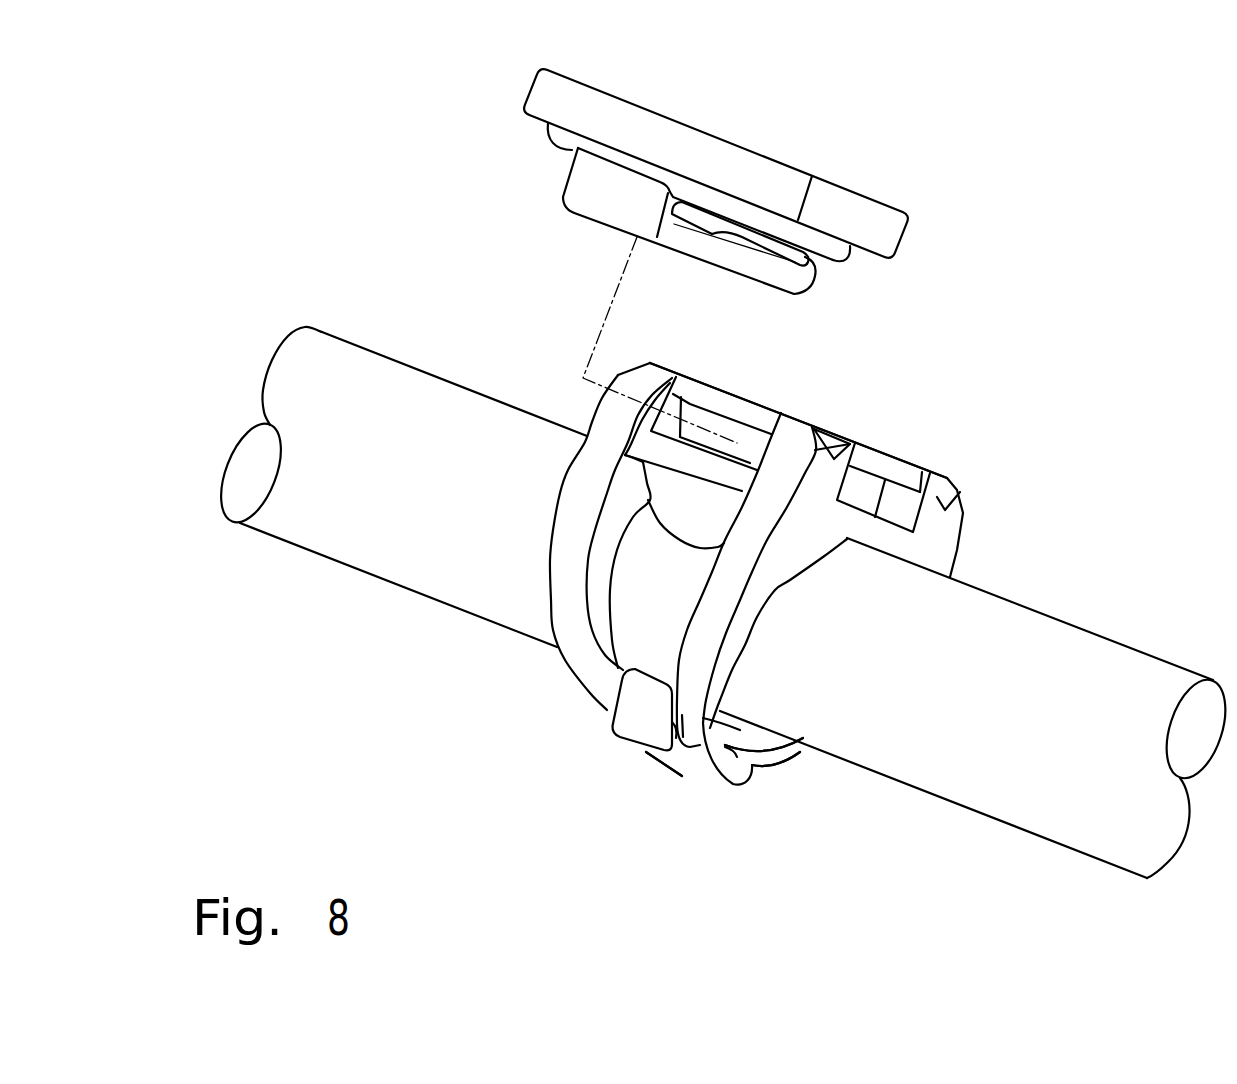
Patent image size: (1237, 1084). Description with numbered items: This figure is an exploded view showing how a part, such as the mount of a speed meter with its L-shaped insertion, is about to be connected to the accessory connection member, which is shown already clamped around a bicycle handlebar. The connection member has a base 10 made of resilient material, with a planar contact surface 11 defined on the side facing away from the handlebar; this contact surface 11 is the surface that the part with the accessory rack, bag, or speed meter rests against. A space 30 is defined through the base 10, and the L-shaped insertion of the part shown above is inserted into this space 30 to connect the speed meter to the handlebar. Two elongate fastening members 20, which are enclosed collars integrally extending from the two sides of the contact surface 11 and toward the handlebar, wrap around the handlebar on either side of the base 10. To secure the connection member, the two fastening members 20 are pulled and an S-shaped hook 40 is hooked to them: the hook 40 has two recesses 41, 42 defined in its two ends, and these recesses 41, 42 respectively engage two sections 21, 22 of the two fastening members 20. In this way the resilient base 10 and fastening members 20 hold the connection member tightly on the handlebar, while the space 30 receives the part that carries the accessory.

The base 10 is at (925, 473).
The planar contact surface 11 is at (760, 407).
The fastening members 20 is at (545, 592).
The section of fastening member 21 is at (690, 748).
The section of fastening member 22 is at (723, 743).
The space 30 is at (708, 409).
The S-shaped hook 40 is at (622, 750).
The recess 41 is at (664, 764).
The recess 42 is at (764, 752).